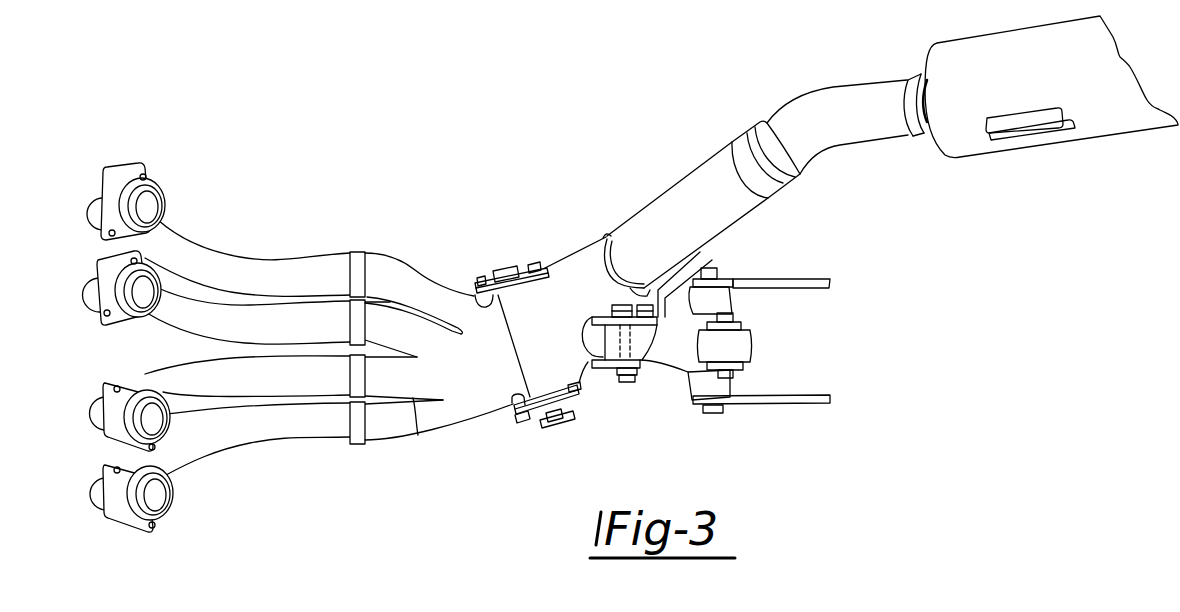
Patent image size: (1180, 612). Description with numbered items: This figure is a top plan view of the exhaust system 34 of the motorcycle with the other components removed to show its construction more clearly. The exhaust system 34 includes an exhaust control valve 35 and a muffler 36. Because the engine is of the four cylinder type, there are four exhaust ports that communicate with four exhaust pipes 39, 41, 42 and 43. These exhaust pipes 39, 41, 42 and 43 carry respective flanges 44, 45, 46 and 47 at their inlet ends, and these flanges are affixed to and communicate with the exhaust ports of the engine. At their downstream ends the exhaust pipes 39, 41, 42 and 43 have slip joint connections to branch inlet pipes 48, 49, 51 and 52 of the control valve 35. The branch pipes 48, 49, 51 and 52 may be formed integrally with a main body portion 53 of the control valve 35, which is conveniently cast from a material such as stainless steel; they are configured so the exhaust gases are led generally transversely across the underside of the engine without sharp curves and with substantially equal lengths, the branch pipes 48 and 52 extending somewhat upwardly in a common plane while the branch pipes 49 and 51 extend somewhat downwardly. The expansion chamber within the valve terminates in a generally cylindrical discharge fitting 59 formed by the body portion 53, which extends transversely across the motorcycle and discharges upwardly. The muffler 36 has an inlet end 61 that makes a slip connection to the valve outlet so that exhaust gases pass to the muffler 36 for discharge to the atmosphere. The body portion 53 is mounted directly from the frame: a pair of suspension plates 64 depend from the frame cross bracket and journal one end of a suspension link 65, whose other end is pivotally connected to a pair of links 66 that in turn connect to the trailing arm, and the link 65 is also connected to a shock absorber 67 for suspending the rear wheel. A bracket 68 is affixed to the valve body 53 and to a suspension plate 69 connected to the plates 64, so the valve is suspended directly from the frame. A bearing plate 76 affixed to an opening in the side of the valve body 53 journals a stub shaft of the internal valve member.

The exhaust system 34 is at (352, 458).
The exhaust control valve 35 is at (467, 273).
The muffler 36 is at (1100, 135).
The exhaust pipe 39 is at (217, 450).
The exhaust pipe 41 is at (150, 373).
The exhaust pipe 42 is at (136, 318).
The exhaust pipe 43 is at (233, 214).
The flange 44 is at (118, 508).
The flange 45 is at (112, 422).
The flange 46 is at (106, 287).
The flange 47 is at (107, 210).
The branch inlet pipe 48 is at (387, 445).
The branch inlet pipe 49 is at (418, 403).
The branch inlet pipe 51 is at (399, 285).
The branch inlet pipe 52 is at (408, 252).
The main body portion 53 is at (553, 265).
The discharge fitting 59 is at (595, 244).
The inlet end 61 is at (641, 216).
The suspension plate 64 is at (590, 318).
The suspension link 65 is at (667, 367).
The link 66 is at (820, 280).
The shock absorber 67 is at (742, 345).
The bracket 68 is at (658, 283).
The suspension plate 69 is at (702, 258).
The bearing plate 76 is at (547, 430).